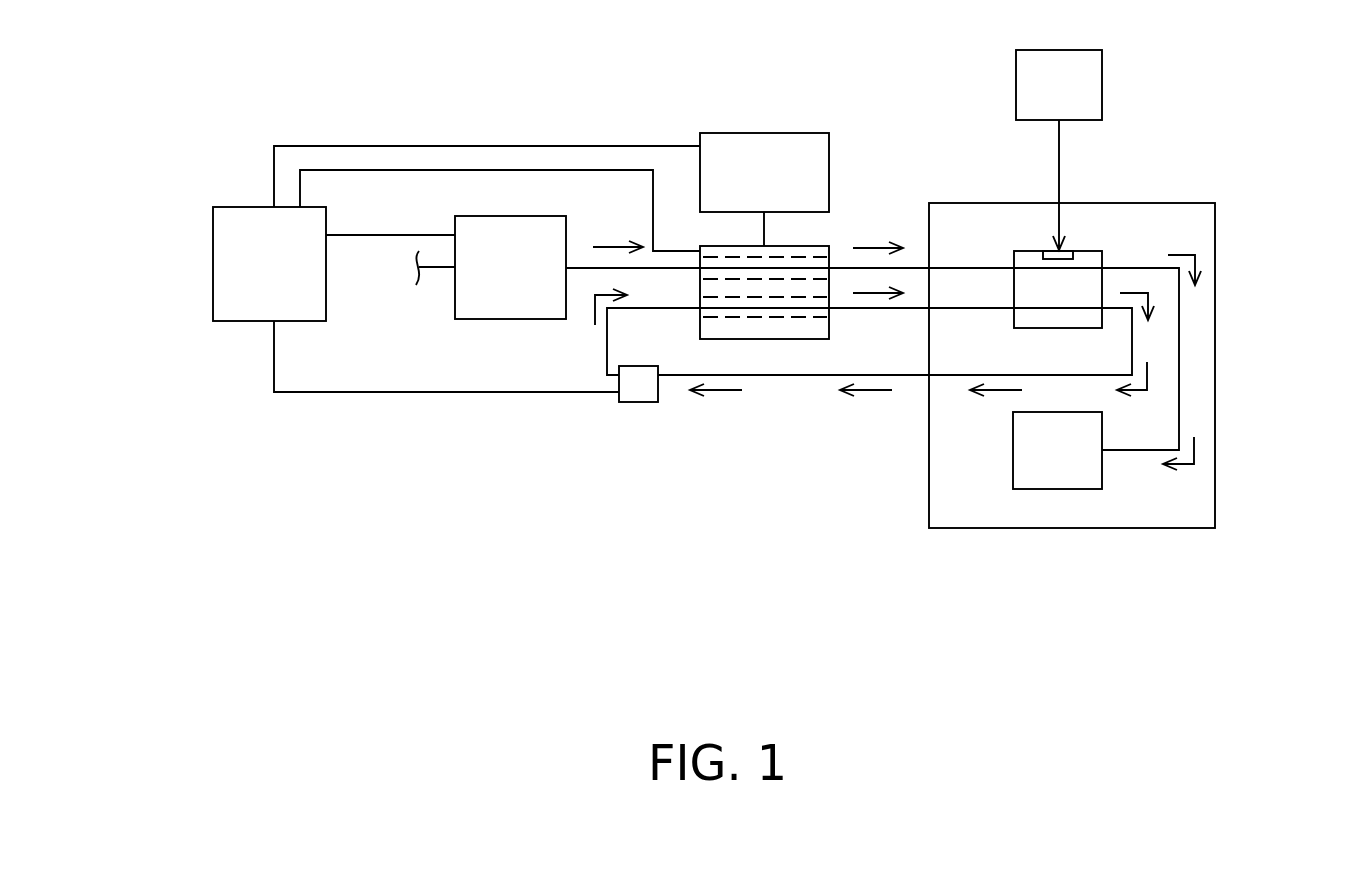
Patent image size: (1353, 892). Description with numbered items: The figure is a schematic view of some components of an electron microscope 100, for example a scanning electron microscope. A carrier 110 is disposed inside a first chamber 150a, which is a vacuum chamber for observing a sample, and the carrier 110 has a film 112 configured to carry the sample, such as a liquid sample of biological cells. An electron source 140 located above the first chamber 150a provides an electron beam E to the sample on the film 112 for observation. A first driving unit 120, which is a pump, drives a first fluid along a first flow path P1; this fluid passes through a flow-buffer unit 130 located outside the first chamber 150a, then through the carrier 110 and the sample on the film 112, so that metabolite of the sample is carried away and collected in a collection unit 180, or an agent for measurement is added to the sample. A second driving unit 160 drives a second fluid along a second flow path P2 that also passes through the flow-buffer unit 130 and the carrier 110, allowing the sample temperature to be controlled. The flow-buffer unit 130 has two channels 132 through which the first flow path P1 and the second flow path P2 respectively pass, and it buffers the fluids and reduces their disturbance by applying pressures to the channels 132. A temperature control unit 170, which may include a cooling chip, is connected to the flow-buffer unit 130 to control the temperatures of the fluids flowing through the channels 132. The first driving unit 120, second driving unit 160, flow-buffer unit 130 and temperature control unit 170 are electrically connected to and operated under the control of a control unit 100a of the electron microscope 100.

The electron microscope 100 is at (1270, 668).
The control unit 100a is at (228, 322).
The carrier 110 is at (1088, 250).
The film 112 is at (1028, 261).
The first driving unit 120 is at (450, 217).
The flow-buffer unit 130 is at (795, 315).
The channels 132 is at (803, 257).
The electron source 140 is at (1102, 84).
The first chamber 150a is at (1215, 457).
The second driving unit 160 is at (638, 402).
The temperature control unit 170 is at (765, 131).
The collection unit 180 is at (1060, 490).
The electron beam E is at (1060, 163).
The first flow path P1 is at (612, 245).
The second flow path P2 is at (590, 315).